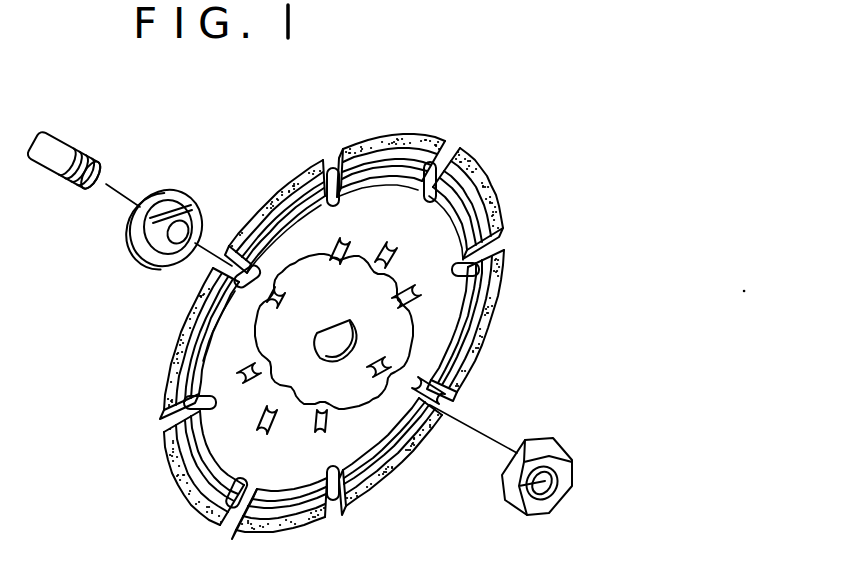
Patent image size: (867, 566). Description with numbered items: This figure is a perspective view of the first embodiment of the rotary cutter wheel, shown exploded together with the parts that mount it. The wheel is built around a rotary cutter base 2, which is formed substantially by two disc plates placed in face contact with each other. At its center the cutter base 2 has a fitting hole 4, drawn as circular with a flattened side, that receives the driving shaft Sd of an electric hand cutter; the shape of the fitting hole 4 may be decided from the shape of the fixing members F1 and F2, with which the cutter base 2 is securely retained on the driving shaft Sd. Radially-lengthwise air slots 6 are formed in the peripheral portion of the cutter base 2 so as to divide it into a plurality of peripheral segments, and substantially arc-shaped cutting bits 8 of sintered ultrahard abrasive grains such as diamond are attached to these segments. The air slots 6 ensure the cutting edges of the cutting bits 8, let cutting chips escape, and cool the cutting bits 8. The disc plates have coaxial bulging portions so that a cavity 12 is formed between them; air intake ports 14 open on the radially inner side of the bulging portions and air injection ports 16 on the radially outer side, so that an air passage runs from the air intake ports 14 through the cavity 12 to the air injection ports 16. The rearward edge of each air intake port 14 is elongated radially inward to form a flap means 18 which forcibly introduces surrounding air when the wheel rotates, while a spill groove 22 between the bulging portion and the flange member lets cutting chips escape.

The rotary cutter base 2 is at (443, 327).
The fitting hole 4 is at (336, 318).
The air slots 6 is at (437, 398).
The cutting bits 8 is at (398, 133).
The cavity 12 is at (500, 242).
The air intake ports 14 is at (240, 373).
The air injection ports 16 is at (430, 142).
The flap means 18 is at (382, 455).
The spill groove 22 is at (488, 194).
The driving shaft Sd is at (60, 145).
The fixing member F1 is at (171, 192).
The fixing member F2 is at (547, 438).